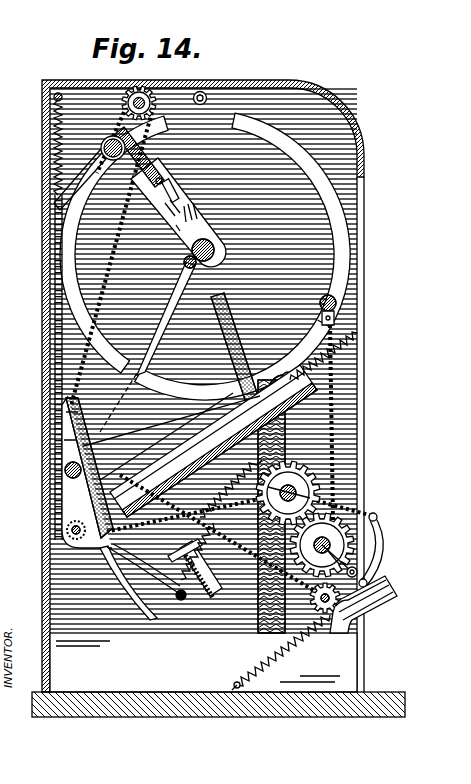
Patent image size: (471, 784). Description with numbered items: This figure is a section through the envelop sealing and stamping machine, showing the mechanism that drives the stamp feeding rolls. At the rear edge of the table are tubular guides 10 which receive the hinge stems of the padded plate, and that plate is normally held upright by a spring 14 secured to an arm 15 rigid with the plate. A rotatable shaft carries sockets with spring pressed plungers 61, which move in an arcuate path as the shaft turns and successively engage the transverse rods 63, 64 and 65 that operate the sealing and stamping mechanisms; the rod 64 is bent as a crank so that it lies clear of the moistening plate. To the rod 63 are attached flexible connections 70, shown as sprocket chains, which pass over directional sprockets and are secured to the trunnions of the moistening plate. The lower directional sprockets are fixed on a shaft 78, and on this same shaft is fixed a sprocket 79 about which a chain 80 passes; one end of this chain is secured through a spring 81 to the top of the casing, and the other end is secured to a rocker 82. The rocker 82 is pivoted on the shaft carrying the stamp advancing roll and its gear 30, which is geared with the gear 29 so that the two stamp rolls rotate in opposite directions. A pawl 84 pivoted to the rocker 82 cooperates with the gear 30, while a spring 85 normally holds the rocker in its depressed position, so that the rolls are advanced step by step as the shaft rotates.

The tubular guides 10 is at (143, 613).
The spring 14 is at (212, 567).
The arm 15 is at (182, 598).
The gear 29 is at (310, 475).
The gear 30 is at (337, 533).
The spring pressed plungers 61 is at (66, 200).
The rod 63 is at (103, 160).
The rod 64 is at (163, 337).
The rod 65 is at (338, 310).
The flexible connections 70 is at (120, 238).
The shaft 78 is at (80, 542).
The sprocket 79 is at (70, 521).
The chain 80 is at (57, 297).
The spring 81 is at (52, 143).
The rocker 82 is at (383, 558).
The pawl 84 is at (358, 567).
The spring 85 is at (283, 655).